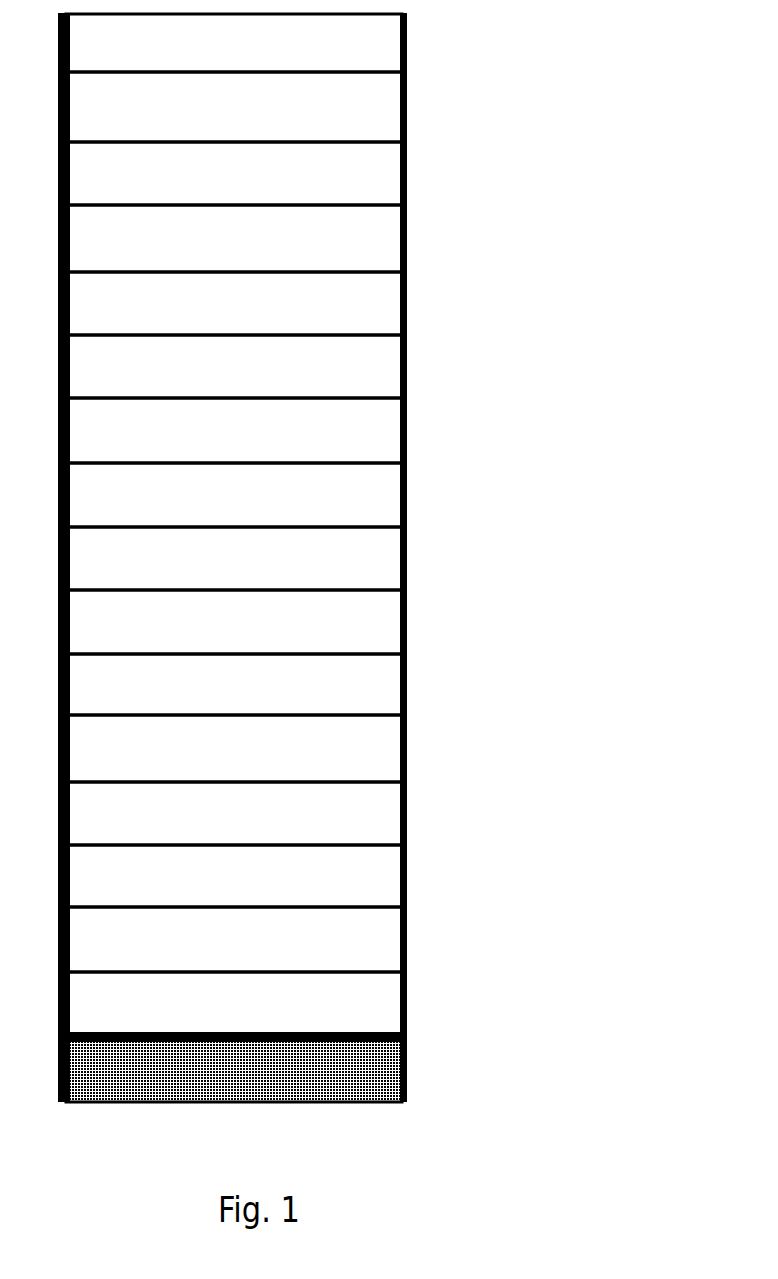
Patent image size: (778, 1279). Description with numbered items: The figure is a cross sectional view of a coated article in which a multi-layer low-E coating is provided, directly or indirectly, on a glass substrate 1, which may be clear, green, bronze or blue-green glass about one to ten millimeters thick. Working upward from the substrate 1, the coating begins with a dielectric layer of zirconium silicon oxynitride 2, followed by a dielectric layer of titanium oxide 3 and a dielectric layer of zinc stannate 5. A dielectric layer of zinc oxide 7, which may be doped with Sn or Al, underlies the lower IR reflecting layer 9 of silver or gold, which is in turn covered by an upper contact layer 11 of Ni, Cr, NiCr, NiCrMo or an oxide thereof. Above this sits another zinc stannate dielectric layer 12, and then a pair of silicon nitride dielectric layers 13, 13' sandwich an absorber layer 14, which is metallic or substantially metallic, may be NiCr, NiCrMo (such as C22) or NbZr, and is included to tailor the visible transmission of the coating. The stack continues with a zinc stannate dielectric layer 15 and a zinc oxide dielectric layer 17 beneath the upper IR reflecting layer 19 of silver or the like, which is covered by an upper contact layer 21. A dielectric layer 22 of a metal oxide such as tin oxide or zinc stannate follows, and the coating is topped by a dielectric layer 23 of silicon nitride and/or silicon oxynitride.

The dielectric layer 23 is at (382, 46).
The dielectric layer 22 is at (352, 115).
The upper contact layer 21 is at (337, 180).
The IR reflecting layer 19 is at (380, 248).
The dielectric layer 17 is at (338, 311).
The dielectric layer 15 is at (385, 367).
The dielectric layer 13' is at (302, 430).
The absorber layer 14 is at (378, 499).
The dielectric layer 13 is at (296, 558).
The dielectric layer 12 is at (397, 628).
The upper contact layer 11 is at (370, 689).
The IR reflecting layer 9 is at (323, 754).
The dielectric layer 7 is at (387, 811).
The dielectric layer 5 is at (382, 877).
The dielectric layer 3 is at (347, 944).
The dielectric layer 2 is at (378, 1004).
The glass substrate 1 is at (373, 1068).